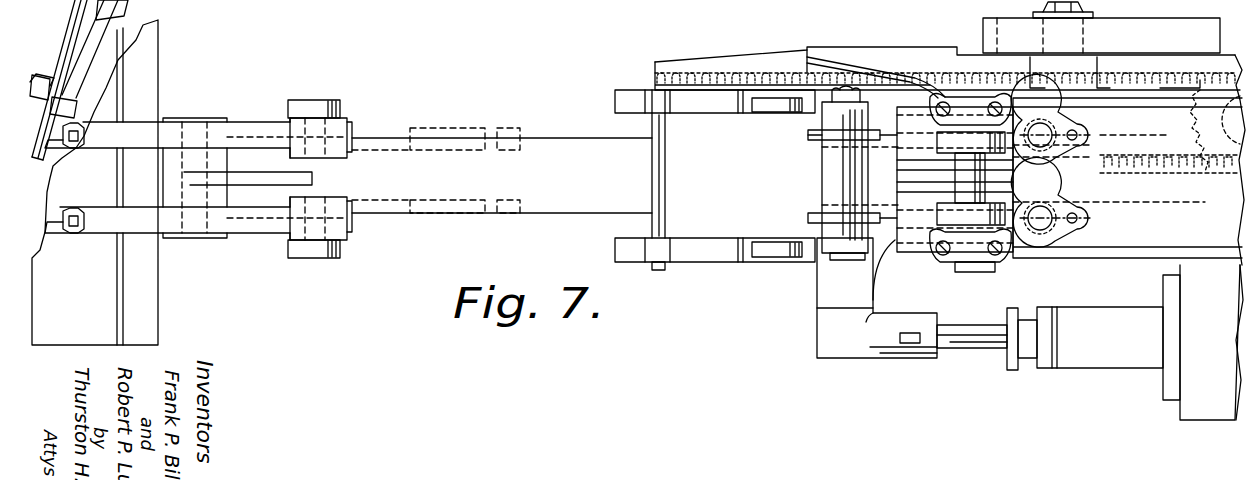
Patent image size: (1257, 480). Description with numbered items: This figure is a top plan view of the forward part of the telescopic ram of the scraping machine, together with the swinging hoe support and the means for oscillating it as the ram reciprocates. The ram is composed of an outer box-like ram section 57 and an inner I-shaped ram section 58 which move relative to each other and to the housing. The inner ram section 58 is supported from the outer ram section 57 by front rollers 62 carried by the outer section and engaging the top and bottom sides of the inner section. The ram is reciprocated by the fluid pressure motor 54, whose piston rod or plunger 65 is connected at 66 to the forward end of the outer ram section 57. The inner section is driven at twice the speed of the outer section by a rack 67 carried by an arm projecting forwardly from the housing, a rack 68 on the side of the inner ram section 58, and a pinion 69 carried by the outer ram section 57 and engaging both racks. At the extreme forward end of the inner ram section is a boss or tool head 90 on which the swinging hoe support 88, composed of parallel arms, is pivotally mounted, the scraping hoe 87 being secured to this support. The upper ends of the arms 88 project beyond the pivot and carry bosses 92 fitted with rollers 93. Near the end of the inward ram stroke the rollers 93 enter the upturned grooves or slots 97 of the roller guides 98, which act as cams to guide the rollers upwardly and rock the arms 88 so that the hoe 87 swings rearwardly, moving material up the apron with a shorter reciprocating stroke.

The ram operating fluid pressure motor 54 is at (1190, 393).
The outer box-like ram section 57 is at (915, 250).
The inner I-shaped ram section 58 is at (715, 180).
The front rollers 62 is at (820, 191).
The cylinder 65 is at (990, 355).
The piston rod connection 66 is at (820, 297).
The rack 67 is at (755, 72).
The rack 68 is at (1207, 178).
The pinion 69 is at (1196, 135).
The scraping hoe 87 is at (148, 327).
The swinging hoe support 88 is at (150, 226).
The tool head 90 is at (200, 175).
The bosses 92 is at (348, 128).
The rollers 93 is at (335, 96).
The upturned grooves or slots 97 is at (786, 113).
The roller guides 98 is at (765, 258).